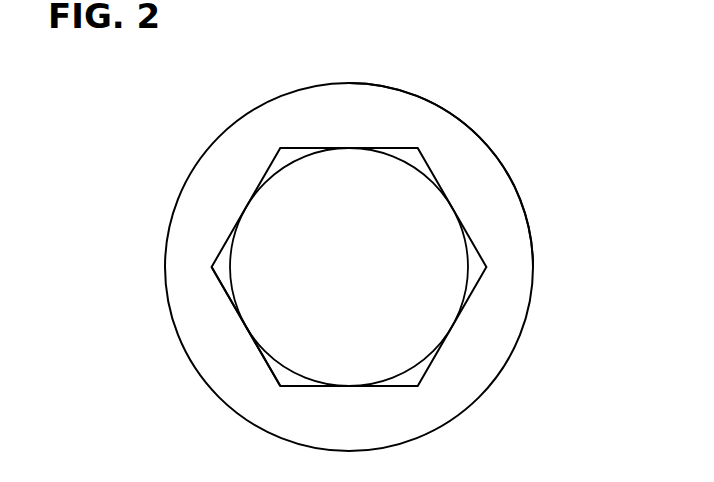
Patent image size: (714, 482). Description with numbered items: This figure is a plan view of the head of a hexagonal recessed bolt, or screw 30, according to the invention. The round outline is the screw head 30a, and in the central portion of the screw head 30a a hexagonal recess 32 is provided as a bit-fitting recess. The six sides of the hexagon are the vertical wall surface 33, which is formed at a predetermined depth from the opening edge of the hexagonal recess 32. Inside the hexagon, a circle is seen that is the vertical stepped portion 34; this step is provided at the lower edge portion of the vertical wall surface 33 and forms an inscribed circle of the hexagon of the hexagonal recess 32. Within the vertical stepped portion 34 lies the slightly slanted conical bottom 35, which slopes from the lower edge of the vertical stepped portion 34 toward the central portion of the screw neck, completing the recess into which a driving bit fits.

The hexagonal recessed bolt 30 is at (211, 126).
The screw head 30a is at (478, 192).
The hexagonal recess 32 is at (290, 375).
The vertical wall surface 33 is at (300, 147).
The vertical stepped portion 34 is at (433, 343).
The conical bottom 35 is at (423, 263).